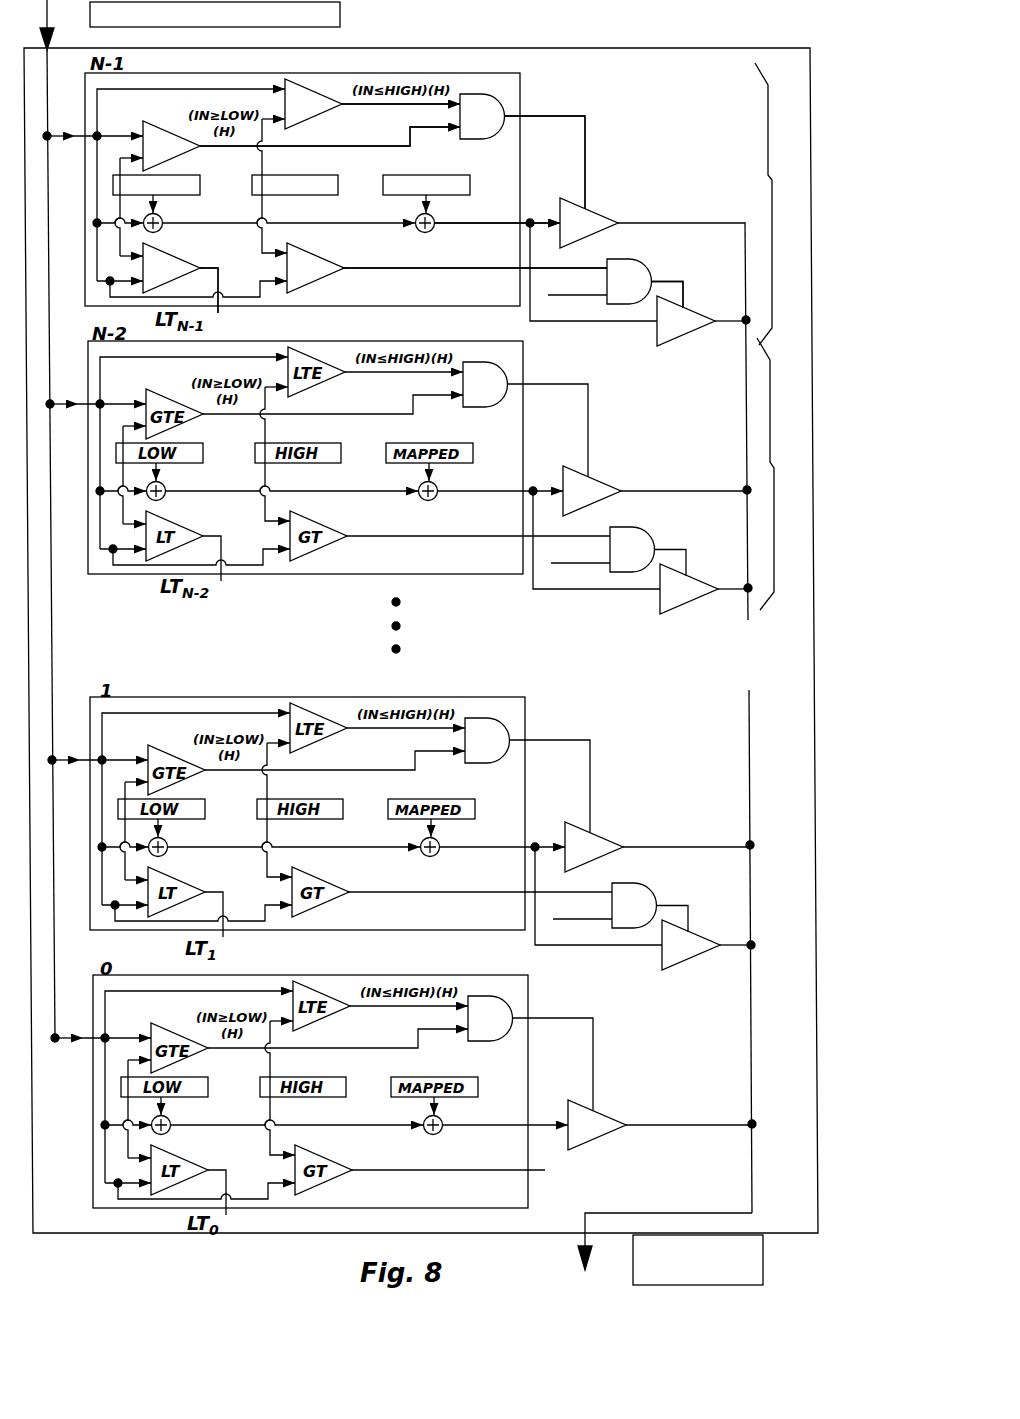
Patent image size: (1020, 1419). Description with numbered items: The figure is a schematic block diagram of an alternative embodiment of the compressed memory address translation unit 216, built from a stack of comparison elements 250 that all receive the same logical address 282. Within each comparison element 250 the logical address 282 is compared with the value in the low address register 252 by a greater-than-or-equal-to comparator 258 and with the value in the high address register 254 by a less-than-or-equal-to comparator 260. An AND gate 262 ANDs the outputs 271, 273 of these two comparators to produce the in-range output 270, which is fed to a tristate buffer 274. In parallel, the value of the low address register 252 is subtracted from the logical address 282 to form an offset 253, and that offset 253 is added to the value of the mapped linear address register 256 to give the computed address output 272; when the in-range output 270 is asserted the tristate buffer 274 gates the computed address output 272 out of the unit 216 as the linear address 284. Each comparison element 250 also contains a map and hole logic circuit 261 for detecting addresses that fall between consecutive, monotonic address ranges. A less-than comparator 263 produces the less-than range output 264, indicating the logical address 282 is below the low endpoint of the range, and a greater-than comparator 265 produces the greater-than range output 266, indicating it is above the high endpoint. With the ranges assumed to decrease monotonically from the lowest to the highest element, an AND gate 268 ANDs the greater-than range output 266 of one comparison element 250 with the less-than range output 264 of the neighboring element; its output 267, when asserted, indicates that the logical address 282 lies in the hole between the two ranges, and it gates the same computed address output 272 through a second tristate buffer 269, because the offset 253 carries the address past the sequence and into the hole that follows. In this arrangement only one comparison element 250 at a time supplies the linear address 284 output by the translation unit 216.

The compressed memory address translation unit 216 is at (816, 66).
The comparison element 250 is at (526, 80).
The low address register 252 is at (183, 171).
The offset 253 is at (193, 215).
The high address register 254 is at (387, 216).
The mapped linear address register 256 is at (425, 168).
The greater-than-or-equal-to comparator 258 is at (150, 132).
The less-than-or-equal-to comparator 260 is at (287, 90).
The map and hole logic circuit 261 is at (772, 180).
The AND gate 262 is at (482, 116).
The less-than comparator 263 is at (188, 260).
The less-than range output 264 is at (245, 302).
The greater-than comparator 265 is at (336, 261).
The greater-than range output 266 is at (474, 283).
The output of the AND gate 267 is at (696, 290).
The AND gate 268 is at (653, 269).
The tristate buffer 269 is at (690, 340).
The in-range output 270 is at (583, 140).
The output of the greater-than-or-equal-to comparator 271 is at (330, 125).
The computed address output 272 is at (498, 190).
The output of the less-than-or-equal-to comparator 273 is at (401, 77).
The tristate buffer 274 is at (609, 211).
The logical address 282 is at (90, 16).
The linear address 284 is at (590, 1236).